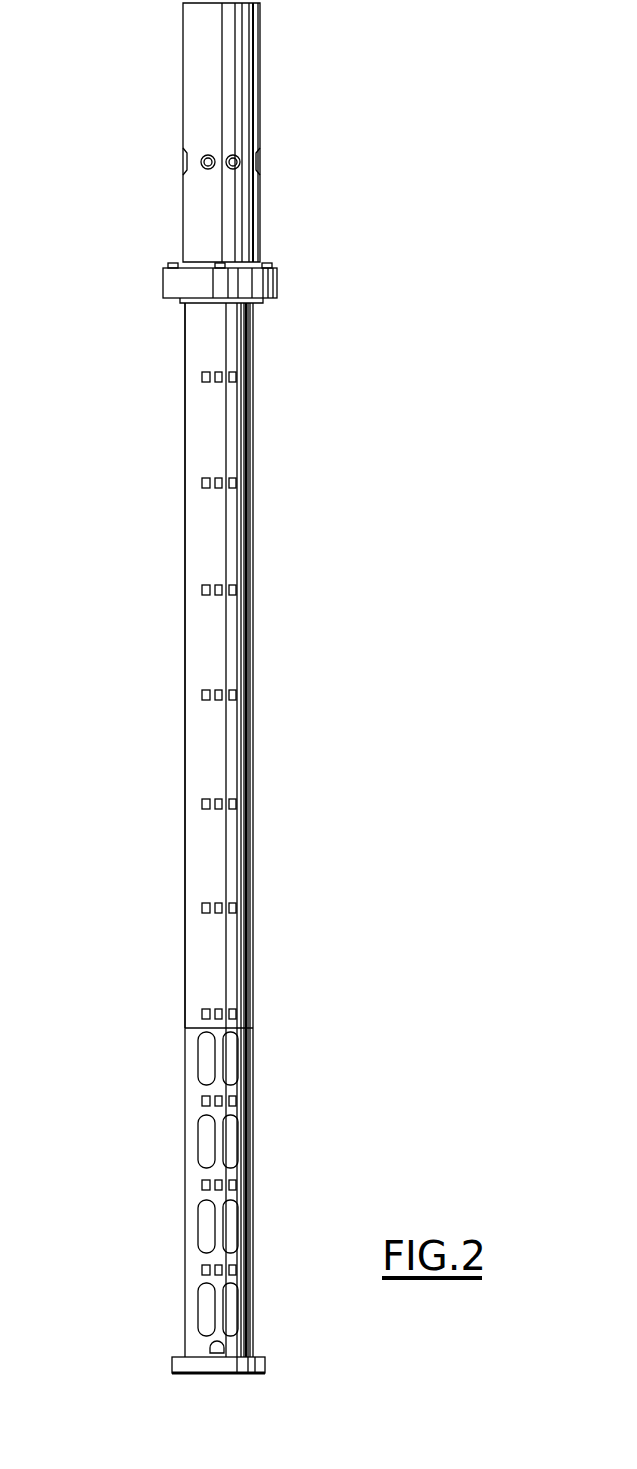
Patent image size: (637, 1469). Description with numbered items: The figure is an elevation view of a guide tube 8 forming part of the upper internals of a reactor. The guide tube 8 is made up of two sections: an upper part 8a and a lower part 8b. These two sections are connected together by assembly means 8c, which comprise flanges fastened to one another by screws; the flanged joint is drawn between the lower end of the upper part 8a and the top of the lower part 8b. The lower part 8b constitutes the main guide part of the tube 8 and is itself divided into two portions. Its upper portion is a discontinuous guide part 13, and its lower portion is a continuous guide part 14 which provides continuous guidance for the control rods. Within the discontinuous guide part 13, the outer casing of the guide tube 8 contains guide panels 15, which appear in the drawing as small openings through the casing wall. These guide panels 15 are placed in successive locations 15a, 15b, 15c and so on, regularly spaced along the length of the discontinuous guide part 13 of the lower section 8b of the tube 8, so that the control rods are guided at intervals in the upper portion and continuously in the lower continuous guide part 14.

The guide tube 8 is at (252, 653).
The upper part 8a is at (200, 102).
The lower part 8b is at (220, 430).
The assembly means 8c is at (178, 277).
The discontinuous guide part 13 is at (198, 748).
The continuous guide part 14 is at (195, 1092).
The guide panels 15 is at (222, 908).
The location of guide panel 15a is at (202, 378).
The location of guide panel 15b is at (222, 483).
The location of guide panel 15c is at (202, 590).